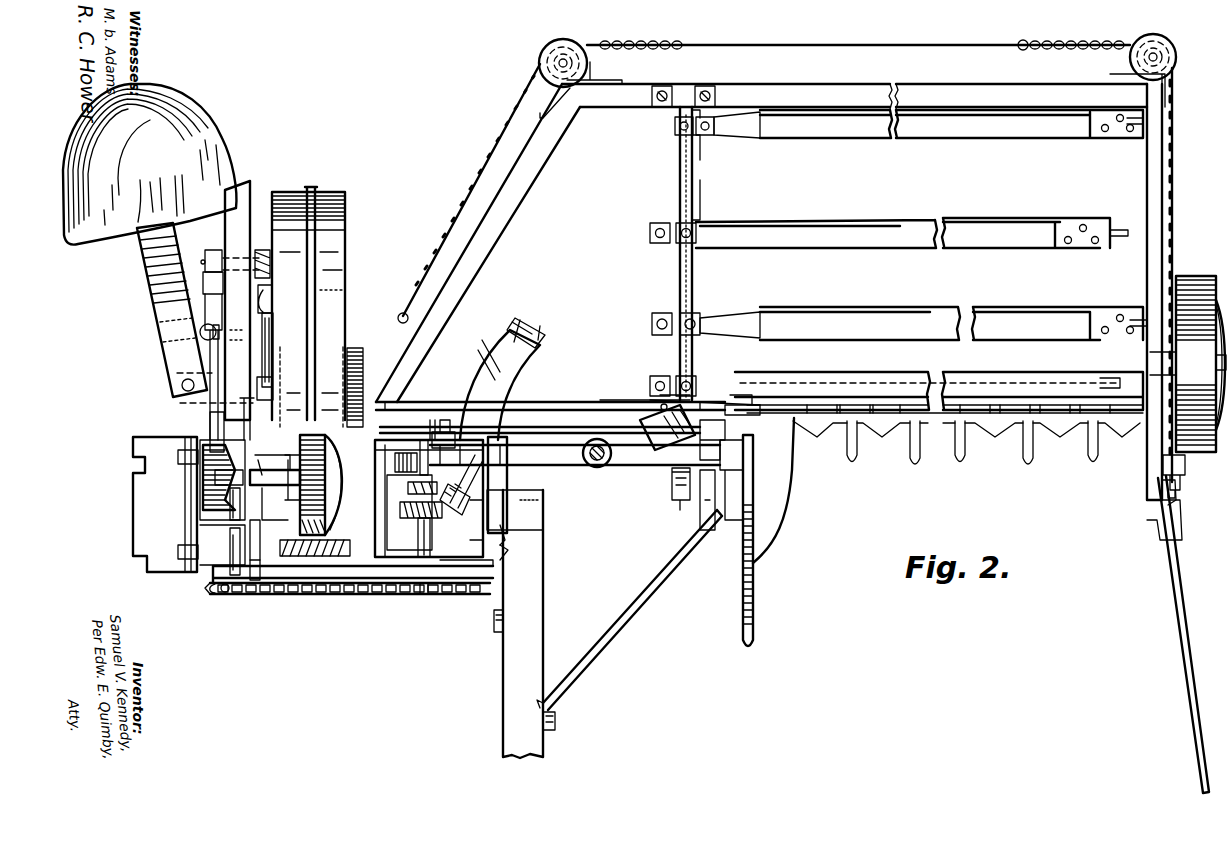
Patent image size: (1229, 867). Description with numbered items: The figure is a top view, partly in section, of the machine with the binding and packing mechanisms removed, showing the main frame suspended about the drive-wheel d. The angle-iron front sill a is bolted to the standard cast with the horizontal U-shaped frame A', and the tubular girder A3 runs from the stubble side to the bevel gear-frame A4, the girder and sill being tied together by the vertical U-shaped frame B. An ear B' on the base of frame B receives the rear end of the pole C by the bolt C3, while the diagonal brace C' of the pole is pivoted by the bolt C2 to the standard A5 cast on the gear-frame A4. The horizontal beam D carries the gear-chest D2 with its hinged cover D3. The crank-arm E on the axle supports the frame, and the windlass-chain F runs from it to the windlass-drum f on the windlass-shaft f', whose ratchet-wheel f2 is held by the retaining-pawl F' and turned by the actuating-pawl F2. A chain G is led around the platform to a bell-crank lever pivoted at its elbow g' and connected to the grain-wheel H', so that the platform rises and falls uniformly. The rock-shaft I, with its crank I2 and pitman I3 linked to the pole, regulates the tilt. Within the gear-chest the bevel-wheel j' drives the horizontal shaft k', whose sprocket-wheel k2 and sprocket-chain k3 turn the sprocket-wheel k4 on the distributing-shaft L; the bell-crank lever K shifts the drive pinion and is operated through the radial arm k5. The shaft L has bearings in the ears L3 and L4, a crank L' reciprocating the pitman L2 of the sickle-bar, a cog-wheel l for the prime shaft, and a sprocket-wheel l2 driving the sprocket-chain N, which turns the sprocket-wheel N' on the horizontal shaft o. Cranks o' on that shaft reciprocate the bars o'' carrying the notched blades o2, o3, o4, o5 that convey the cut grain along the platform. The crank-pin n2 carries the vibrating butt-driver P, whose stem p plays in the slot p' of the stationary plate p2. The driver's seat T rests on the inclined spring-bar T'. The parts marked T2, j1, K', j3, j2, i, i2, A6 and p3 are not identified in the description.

The chain G is at (794, 255).
The front sill a is at (779, 301).
The cranks o' is at (682, 241).
The horizontal shaft o is at (680, 235).
The bars o'' is at (734, 225).
The notched blade o5 is at (951, 131).
The notched blade o4 is at (912, 238).
The notched blade o3 is at (953, 329).
The notched blade o2 is at (939, 390).
The stem p is at (921, 404).
The driver's seat T is at (149, 164).
The inclined spring-bar T' is at (172, 310).
The hood bracket T2 is at (215, 388).
The horizontal beam D is at (237, 300).
The ratchet-wheel f2 is at (231, 336).
The windlass-shaft f' is at (195, 249).
The windlass-drum f is at (263, 273).
The adjustable retaining-pawl F' is at (275, 332).
The actuating-pawl F2 is at (192, 416).
The crank-arm E is at (221, 426).
The radial arm k5 is at (243, 419).
The windlass-chain F is at (317, 307).
The drive-wheel d is at (314, 303).
The hinged cover D3 is at (165, 504).
The bevel-wheel j' is at (200, 480).
The gear shaft j1 is at (226, 482).
The bell-crank lever K is at (275, 460).
The shaft end K' is at (273, 498).
The gear j3 is at (312, 485).
The gear arm j2 is at (335, 485).
The gear-chest D2 is at (222, 545).
The horizontal shaft k' is at (234, 551).
The base plate i is at (300, 560).
The rock-shaft I is at (353, 569).
The sprocket-chain k3 is at (350, 595).
The sprocket-wheel k2 is at (217, 597).
The sprocket-wheel k4 is at (436, 590).
The horizontal U-shaped frame A' is at (327, 522).
The distributing-shaft L is at (429, 498).
The ear L4 is at (411, 457).
The pinion i2 is at (415, 486).
The cog-wheel l is at (415, 510).
The sprocket-wheel l2 is at (409, 537).
The ear and groove L3 is at (446, 555).
The crank L' is at (447, 520).
The pitman L2 is at (540, 425).
The block A6 is at (450, 437).
The tubular girder A3 is at (575, 455).
The bevel gear-frame A4 is at (611, 453).
The standard A5 is at (742, 488).
The sprocket-wheel N' is at (675, 491).
The bolt C2 is at (692, 515).
The vertical U-shaped frame B is at (502, 379).
The ear B' is at (473, 485).
The bolt C3 is at (548, 508).
The pole C is at (524, 624).
The pitman I3 is at (505, 530).
The crank I2 is at (505, 553).
The diagonal brace C' is at (629, 610).
The vibrating butt-driver P is at (645, 392).
The slot p' is at (639, 397).
The stationary vertical plate p2 is at (660, 408).
The sprocket-chain N is at (707, 440).
The crank-pin n2 is at (735, 418).
The bar p3 is at (715, 408).
The grain-wheel H' is at (1188, 364).
The elbow g' is at (1183, 624).